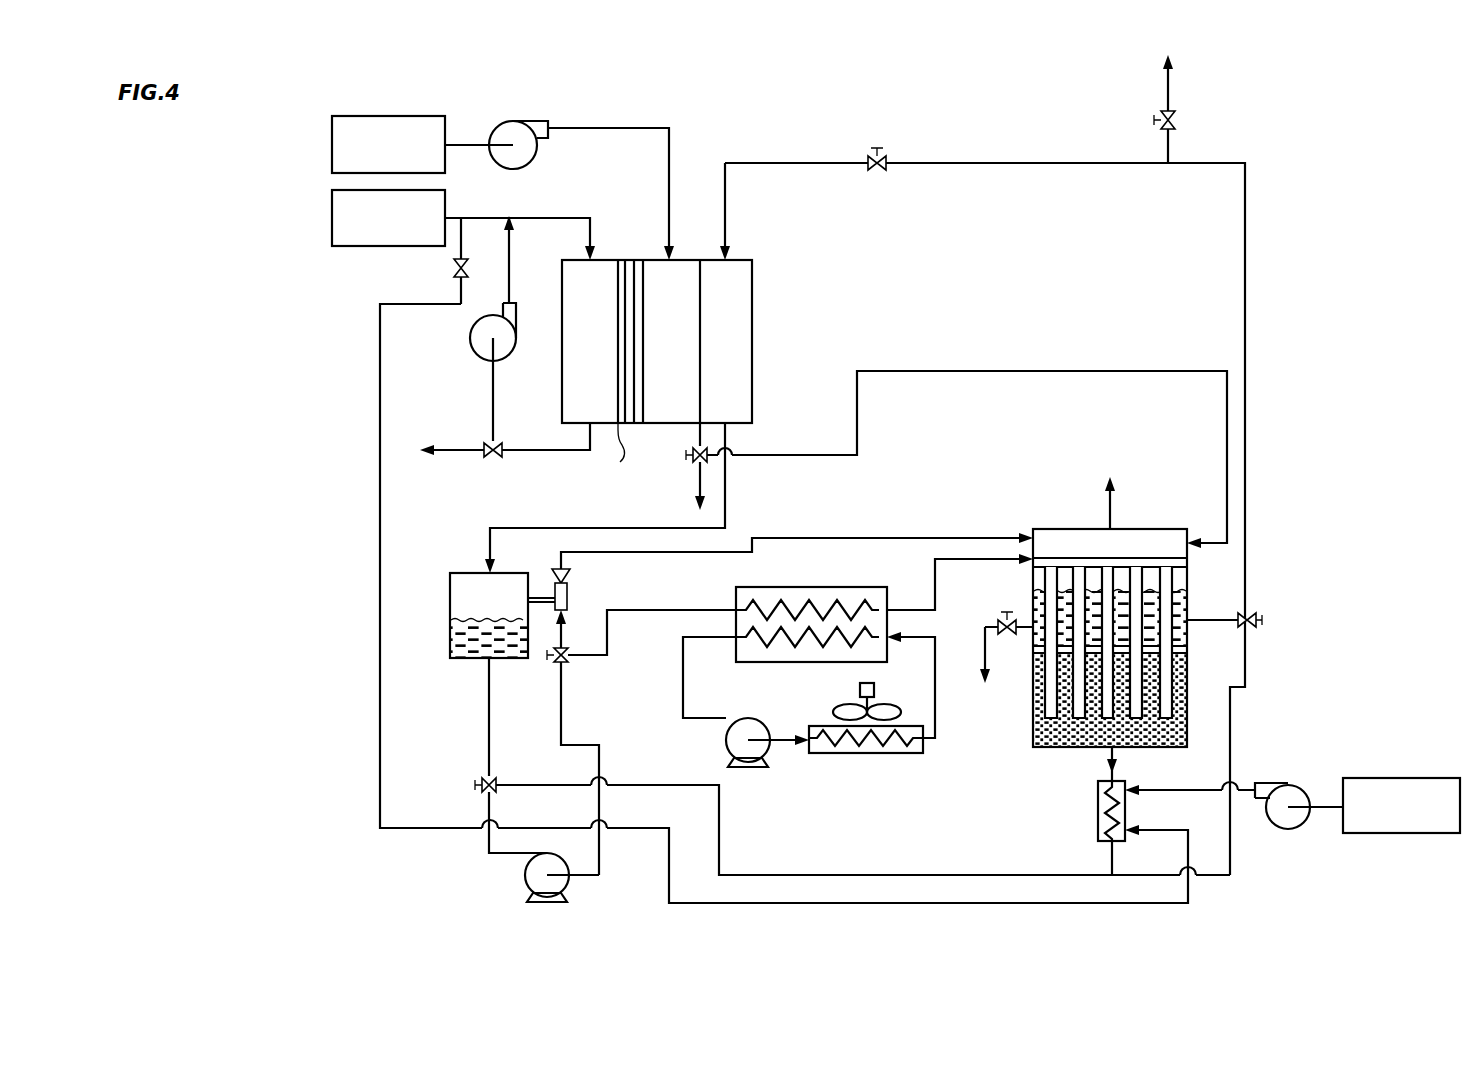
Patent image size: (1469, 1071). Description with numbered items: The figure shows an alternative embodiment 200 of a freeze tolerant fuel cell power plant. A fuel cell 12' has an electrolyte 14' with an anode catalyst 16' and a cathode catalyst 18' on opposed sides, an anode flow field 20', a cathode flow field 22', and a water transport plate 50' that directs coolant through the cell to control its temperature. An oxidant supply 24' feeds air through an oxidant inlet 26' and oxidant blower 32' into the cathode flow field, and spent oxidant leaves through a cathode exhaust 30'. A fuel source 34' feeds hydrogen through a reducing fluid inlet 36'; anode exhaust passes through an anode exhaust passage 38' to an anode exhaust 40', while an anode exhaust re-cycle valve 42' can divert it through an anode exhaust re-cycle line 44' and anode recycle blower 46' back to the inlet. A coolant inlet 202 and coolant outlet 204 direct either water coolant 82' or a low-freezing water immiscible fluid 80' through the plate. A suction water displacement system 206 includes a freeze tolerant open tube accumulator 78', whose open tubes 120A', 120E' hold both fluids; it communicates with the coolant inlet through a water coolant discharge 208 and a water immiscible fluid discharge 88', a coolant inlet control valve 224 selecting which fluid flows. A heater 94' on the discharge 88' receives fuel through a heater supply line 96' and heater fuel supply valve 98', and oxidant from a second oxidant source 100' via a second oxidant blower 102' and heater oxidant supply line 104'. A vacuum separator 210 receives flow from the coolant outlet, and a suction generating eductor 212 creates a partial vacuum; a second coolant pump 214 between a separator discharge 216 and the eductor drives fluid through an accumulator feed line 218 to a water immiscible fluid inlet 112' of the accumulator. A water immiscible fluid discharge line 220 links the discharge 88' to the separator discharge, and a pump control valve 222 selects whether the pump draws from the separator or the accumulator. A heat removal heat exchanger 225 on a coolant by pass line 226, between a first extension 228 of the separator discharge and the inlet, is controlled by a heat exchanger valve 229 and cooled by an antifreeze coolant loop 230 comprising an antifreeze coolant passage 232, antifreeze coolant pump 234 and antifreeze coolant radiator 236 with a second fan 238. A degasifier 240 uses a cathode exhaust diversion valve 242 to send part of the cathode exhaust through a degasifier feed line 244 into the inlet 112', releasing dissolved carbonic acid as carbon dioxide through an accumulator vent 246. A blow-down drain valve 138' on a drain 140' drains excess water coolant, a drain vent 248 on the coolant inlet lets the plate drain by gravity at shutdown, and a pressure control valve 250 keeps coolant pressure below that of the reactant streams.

The fuel cell 12' is at (657, 284).
The electrolyte 14' is at (593, 454).
The anode catalyst 16' is at (596, 341).
The cathode catalyst 18' is at (661, 341).
The anode flow field 20' is at (590, 341).
The cathode flow field 22' is at (671, 341).
The oxidant supply 24' is at (376, 120).
The oxidant inlet 26' is at (611, 161).
The cathode exhaust 30' is at (667, 490).
The oxidant blower 32' is at (496, 120).
The reducing fluid fuel source 34' is at (360, 212).
The reducing fluid inlet 36' is at (520, 223).
The anode exhaust passage 38' is at (546, 416).
The anode exhaust 40' is at (449, 481).
The anode exhaust re-cycle valve 42' is at (448, 426).
The anode exhaust re-cycle line 44' is at (460, 389).
The anode recycle blower 46' is at (457, 288).
The water transport plate 50' is at (725, 341).
The open tube accumulator 78' is at (1040, 792).
The water immiscible fluid 80' is at (1068, 687).
The water coolant 82' is at (1127, 653).
The water immiscible fluid discharge 88' is at (1065, 822).
The heater 94' is at (1073, 824).
The heater fuel supply line 96' is at (749, 603).
The heater fuel supply valve 98' is at (429, 261).
The second oxidant storage source 100' is at (1402, 774).
The second oxidant blower 102' is at (1317, 780).
The heater oxidant supply line 104' is at (1212, 839).
The water immiscible fluid inlet 112' is at (1100, 520).
The first tube 120A' is at (1001, 658).
The fifth tube 120E' is at (1228, 652).
The blow-down drain valve 138' is at (993, 606).
The drain 140' is at (966, 672).
The freeze tolerant fuel cell power plant 200 is at (1255, 118).
The coolant inlet 202 is at (998, 163).
The coolant outlet 204 is at (728, 483).
The suction water displacement system 206 is at (918, 512).
The water coolant discharge 208 is at (1218, 622).
The vacuum separator 210 is at (455, 597).
The suction generating eductor 212 is at (568, 602).
The second coolant pump 214 is at (530, 876).
The separator discharge 216 is at (489, 688).
The accumulator feed line 218 is at (840, 540).
The water immiscible fluid discharge line 220 is at (812, 875).
The pump control valve means 222 is at (495, 778).
The coolant inlet control valve means 224 is at (1250, 612).
The heat removal heat exchanger 225 is at (836, 587).
The coolant by pass line 226 is at (710, 610).
The first extension of the separator discharge 228 is at (562, 728).
The heat exchanger valve 229 is at (565, 660).
The antifreeze coolant loop 230 is at (750, 800).
The antifreeze coolant passage 232 is at (680, 670).
The antifreeze coolant pump 234 is at (735, 745).
The antifreeze coolant radiator 236 is at (866, 753).
The second fan 238 is at (842, 712).
The degasifier 240 is at (1075, 395).
The cathode exhaust diversion valve 242 is at (692, 455).
The degasifier feed line 244 is at (1227, 430).
The accumulator vent 246 is at (1112, 505).
The drain vent 248 is at (1160, 140).
The pressure control valve 250 is at (872, 170).